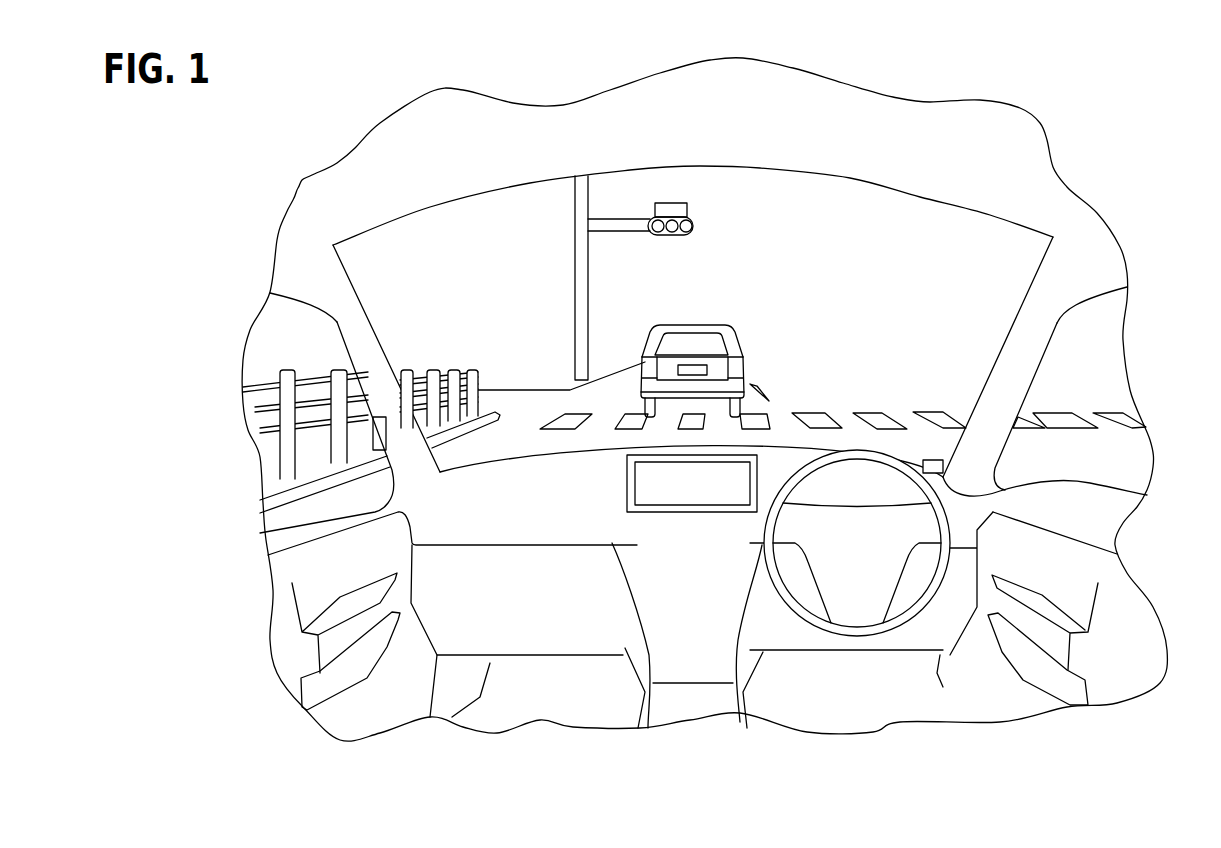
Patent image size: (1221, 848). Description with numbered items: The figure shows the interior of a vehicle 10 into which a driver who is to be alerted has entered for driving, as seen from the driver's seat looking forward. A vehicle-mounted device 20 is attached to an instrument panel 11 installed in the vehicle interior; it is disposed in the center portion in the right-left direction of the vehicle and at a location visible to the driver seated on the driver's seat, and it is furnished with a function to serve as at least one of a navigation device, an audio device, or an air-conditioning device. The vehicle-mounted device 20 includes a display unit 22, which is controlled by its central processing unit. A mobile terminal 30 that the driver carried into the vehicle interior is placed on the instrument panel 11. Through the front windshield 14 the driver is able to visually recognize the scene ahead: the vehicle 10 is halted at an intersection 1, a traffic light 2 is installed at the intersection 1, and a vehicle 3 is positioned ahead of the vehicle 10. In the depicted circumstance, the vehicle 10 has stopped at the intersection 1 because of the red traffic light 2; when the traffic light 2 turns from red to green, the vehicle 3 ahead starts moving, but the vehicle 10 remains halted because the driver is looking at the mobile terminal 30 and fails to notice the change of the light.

The intersection 1 is at (612, 400).
The traffic light 2 is at (693, 220).
The vehicle ahead 3 is at (737, 346).
The vehicle 10 is at (957, 130).
The instrument panel 11 is at (533, 503).
The front windshield 14 is at (980, 260).
The vehicle-mounted device 20 is at (627, 490).
The display unit 22 is at (688, 512).
The mobile terminal 30 is at (1147, 495).